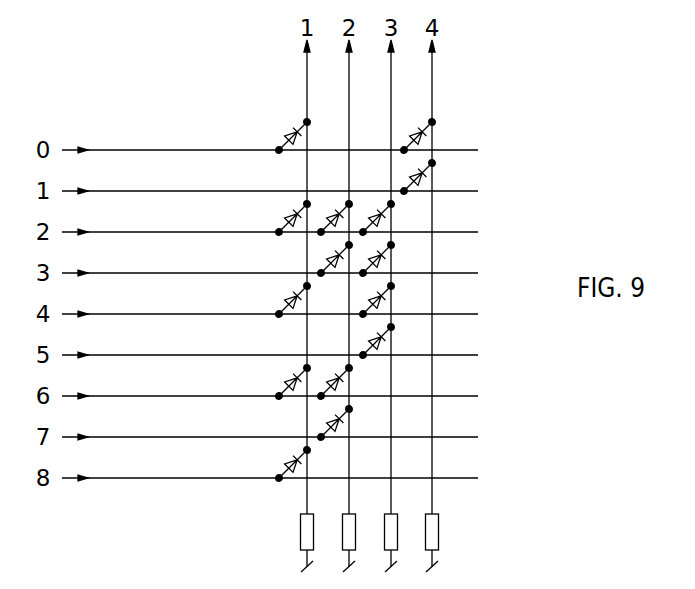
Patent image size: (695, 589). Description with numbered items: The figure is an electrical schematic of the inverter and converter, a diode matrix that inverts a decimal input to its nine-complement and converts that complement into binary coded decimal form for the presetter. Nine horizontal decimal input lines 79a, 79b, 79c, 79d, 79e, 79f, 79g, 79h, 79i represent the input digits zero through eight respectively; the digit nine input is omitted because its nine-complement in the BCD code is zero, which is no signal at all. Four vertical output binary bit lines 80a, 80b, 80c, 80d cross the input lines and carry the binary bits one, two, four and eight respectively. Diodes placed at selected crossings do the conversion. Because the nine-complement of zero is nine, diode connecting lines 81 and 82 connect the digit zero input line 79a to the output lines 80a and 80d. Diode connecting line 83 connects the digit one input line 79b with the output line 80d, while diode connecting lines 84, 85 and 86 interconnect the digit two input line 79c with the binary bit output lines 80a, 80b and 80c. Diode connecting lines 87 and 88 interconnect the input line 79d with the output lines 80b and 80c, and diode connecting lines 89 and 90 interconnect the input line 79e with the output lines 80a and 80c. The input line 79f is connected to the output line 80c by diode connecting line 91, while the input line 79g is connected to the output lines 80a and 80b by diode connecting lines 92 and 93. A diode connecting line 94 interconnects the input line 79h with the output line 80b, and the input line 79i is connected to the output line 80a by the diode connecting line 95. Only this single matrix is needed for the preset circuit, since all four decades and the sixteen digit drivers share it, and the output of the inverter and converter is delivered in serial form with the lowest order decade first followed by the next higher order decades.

The decimal input line 79a is at (155, 150).
The decimal input line 79b is at (155, 191).
The decimal input line 79c is at (155, 232).
The decimal input line 79d is at (155, 273).
The decimal input line 79e is at (155, 314).
The decimal input line 79f is at (155, 355).
The decimal input line 79g is at (155, 396).
The decimal input line 79h is at (155, 437).
The decimal input line 79i is at (155, 478).
The output binary bit line 80a is at (307, 78).
The output binary bit line 80b is at (349, 78).
The output binary bit line 80c is at (391, 78).
The output binary bit line 80d is at (432, 78).
The diode connecting line 81 is at (305, 123).
The diode connecting line 82 is at (430, 122).
The diode connecting line 83 is at (428, 163).
The diode connecting line 84 is at (298, 206).
The diode connecting line 85 is at (343, 206).
The diode connecting line 86 is at (390, 217).
The diode connecting line 87 is at (323, 264).
The diode connecting line 88 is at (391, 251).
The diode connecting line 89 is at (303, 288).
The diode connecting line 90 is at (390, 289).
The diode connecting line 91 is at (395, 331).
The diode connecting line 92 is at (304, 370).
The diode connecting line 93 is at (352, 375).
The diode connecting line 94 is at (352, 415).
The diode connecting line 95 is at (308, 453).